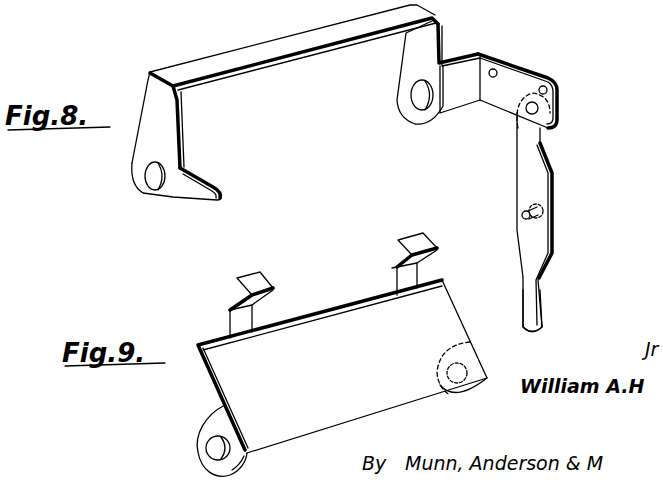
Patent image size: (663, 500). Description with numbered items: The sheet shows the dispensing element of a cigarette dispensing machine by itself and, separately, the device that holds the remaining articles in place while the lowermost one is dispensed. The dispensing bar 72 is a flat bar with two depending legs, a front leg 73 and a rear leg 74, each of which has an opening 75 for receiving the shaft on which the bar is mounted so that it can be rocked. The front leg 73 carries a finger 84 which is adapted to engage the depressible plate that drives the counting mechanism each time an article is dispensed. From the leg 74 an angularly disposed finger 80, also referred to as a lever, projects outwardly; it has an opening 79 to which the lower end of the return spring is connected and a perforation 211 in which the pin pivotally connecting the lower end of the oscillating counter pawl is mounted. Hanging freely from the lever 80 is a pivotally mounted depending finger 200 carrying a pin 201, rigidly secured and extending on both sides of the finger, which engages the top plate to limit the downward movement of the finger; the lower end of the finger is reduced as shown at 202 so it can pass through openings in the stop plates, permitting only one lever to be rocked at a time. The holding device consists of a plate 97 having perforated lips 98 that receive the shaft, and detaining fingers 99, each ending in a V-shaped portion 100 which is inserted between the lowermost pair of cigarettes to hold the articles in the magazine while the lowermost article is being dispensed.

In FIG. 8, the dispensing bar 72 is at (180, 72).
In FIG. 8, the front leg 73 is at (158, 102).
In FIG. 8, the leg 74 is at (418, 57).
In FIG. 8, the opening 75 is at (150, 182).
In FIG. 8, the finger 84 is at (200, 203).
In FIG. 8, the perforation 211 is at (500, 62).
In FIG. 8, the angularly disposed finger 80 is at (515, 88).
In FIG. 8, the opening 79 is at (547, 86).
In FIG. 8, the depending finger 200 is at (535, 192).
In FIG. 8, the pin 201 is at (550, 225).
In FIG. 8, the reduced lower end 202 is at (550, 303).
In FIG. 9, the plate 97 is at (227, 370).
In FIG. 9, the perforated lip 98 is at (204, 452).
In FIG. 9, the detaining finger 99 is at (243, 320).
In FIG. 9, the V-shaped portion 100 is at (270, 287).